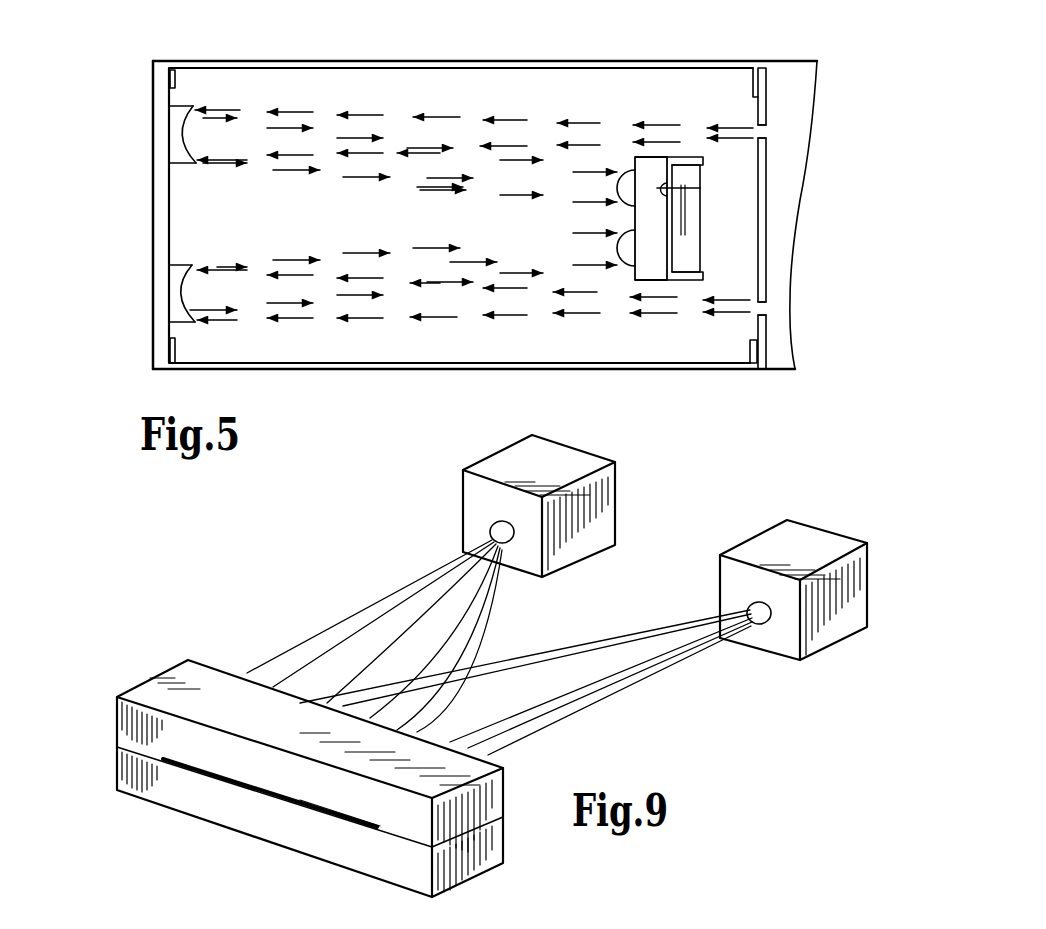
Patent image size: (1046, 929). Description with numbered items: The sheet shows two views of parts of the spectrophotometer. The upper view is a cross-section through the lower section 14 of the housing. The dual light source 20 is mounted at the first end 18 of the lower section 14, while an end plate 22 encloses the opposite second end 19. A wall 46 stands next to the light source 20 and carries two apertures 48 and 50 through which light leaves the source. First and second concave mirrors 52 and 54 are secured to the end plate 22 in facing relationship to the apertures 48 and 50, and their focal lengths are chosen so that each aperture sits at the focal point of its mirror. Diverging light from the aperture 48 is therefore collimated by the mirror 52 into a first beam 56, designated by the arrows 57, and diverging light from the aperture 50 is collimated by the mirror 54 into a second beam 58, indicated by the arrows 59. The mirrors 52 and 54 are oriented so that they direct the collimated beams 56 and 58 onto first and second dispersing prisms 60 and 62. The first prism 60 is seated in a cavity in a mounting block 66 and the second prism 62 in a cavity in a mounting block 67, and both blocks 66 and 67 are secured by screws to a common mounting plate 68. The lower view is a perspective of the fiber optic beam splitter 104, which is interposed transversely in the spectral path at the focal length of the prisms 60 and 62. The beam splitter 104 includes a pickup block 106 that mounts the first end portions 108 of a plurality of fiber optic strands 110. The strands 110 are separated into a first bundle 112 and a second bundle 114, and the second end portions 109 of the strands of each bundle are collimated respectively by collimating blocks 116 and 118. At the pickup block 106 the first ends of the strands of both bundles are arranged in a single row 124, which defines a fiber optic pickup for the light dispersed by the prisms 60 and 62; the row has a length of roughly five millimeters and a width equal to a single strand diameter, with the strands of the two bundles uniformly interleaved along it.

In FIG. 5, the lower section 14 is at (492, 60).
In FIG. 5, the first end 18 is at (747, 348).
In FIG. 5, the second end 19 is at (177, 82).
In FIG. 5, the dual light source 20 is at (787, 66).
In FIG. 5, the end plate 22 is at (160, 102).
In FIG. 5, the partition wall 46 is at (767, 218).
In FIG. 5, the aperture 48 is at (770, 132).
In FIG. 5, the aperture 50 is at (770, 308).
In FIG. 5, the first concave mirror 52 is at (178, 157).
In FIG. 5, the second concave mirror 54 is at (187, 268).
In FIG. 5, the first beam 56 is at (420, 178).
In FIG. 5, the arrows 57 is at (357, 135).
In FIG. 5, the second beam 58 is at (478, 260).
In FIG. 5, the arrows 59 is at (350, 255).
In FIG. 5, the first dispersing prism 60 is at (612, 187).
In FIG. 5, the second dispersing prism 62 is at (620, 263).
In FIG. 5, the mounting block 66 is at (700, 185).
In FIG. 5, the mounting block 67 is at (653, 237).
In FIG. 5, the mounting plate 68 is at (700, 258).
In FIG. 9, the fiber optic beam splitter 104 is at (282, 614).
In FIG. 9, the pickup block 106 is at (230, 830).
In FIG. 9, the first end portions 108 is at (305, 808).
In FIG. 9, the second end portions 109 is at (495, 528).
In FIG. 9, the fiber optic strands 110 is at (460, 620).
In FIG. 9, the first bundle 112 is at (585, 690).
In FIG. 9, the second bundle 114 is at (387, 607).
In FIG. 9, the collimating block 116 is at (788, 533).
In FIG. 9, the collimating block 118 is at (562, 458).
In FIG. 9, the single row 124 is at (182, 763).